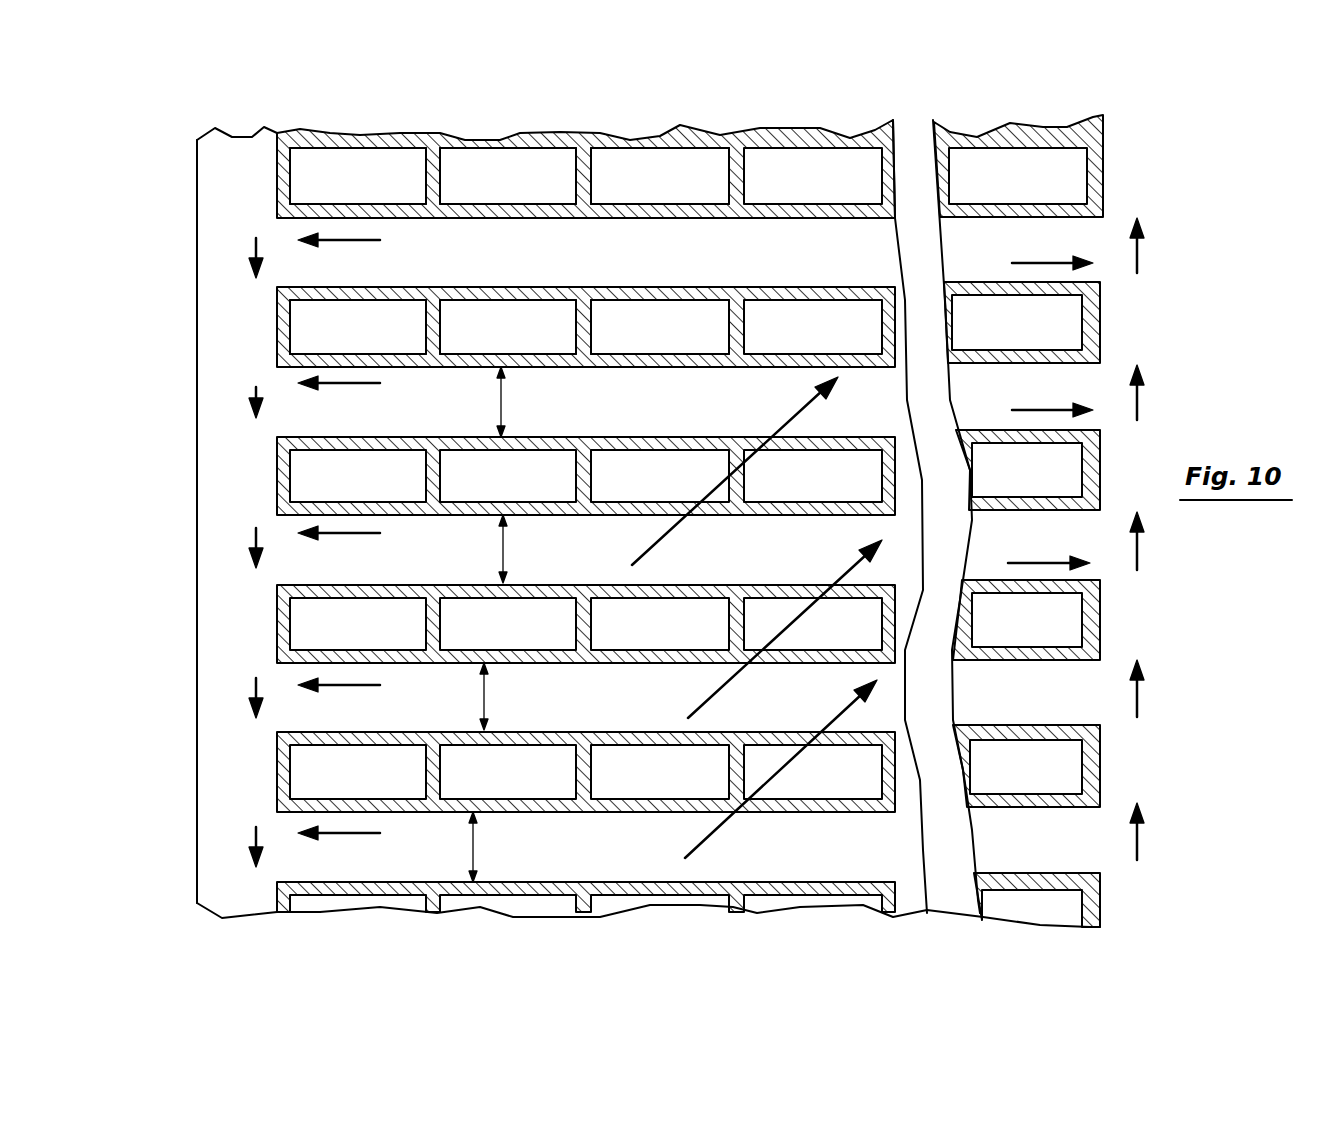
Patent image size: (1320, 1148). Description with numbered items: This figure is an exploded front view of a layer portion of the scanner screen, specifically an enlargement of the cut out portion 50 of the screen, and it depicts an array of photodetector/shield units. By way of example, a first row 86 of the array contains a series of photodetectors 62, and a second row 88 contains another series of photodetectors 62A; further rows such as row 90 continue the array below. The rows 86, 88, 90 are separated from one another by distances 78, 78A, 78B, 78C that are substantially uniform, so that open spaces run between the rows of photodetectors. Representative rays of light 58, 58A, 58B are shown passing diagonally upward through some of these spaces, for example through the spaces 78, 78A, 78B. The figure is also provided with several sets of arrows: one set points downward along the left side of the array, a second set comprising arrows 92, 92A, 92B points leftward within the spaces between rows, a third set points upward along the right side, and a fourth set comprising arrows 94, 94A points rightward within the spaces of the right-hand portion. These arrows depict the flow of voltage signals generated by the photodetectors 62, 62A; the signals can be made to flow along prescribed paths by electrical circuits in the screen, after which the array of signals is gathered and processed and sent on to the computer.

The cut out portion 50 is at (813, 103).
The ray of light 58 is at (717, 828).
The ray of light 58A is at (728, 683).
The ray of light 58B is at (683, 523).
The photodetector 62 is at (317, 160).
The photodetector 62A is at (402, 308).
The distance 78 is at (458, 847).
The distance 78A is at (461, 696).
The distance 78B is at (479, 549).
The distance 78C is at (527, 402).
The first row 86 is at (276, 161).
The second row 88 is at (275, 329).
The row 90 is at (275, 464).
The arrow 92 is at (337, 243).
The arrow 92A is at (330, 386).
The arrow 92B is at (335, 536).
The arrow 94 is at (1033, 262).
The arrow 94A is at (1060, 408).